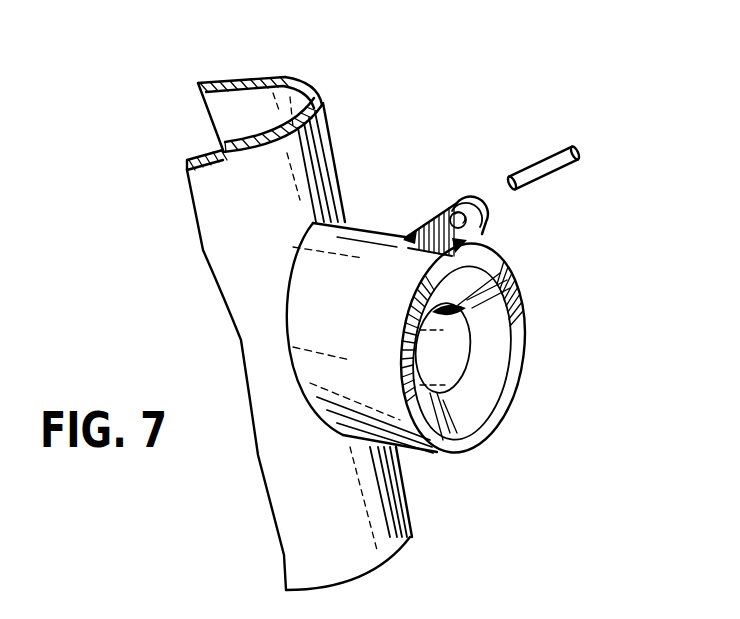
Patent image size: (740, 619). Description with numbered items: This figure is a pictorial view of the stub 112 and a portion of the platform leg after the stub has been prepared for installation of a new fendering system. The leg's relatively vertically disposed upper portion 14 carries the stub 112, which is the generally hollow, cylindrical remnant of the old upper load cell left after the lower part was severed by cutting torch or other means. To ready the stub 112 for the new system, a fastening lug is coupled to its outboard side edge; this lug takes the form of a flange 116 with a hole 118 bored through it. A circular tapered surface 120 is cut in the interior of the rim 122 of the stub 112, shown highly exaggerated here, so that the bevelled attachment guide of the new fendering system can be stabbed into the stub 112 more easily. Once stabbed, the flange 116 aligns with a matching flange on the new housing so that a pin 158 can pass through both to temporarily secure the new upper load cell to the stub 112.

The upper portion 14 is at (311, 153).
The stub 112 is at (390, 233).
The flange 116 is at (447, 210).
The hole 118 is at (470, 237).
The circular tapered surface 120 is at (487, 357).
The rim 122 is at (462, 440).
The pin 158 is at (540, 170).